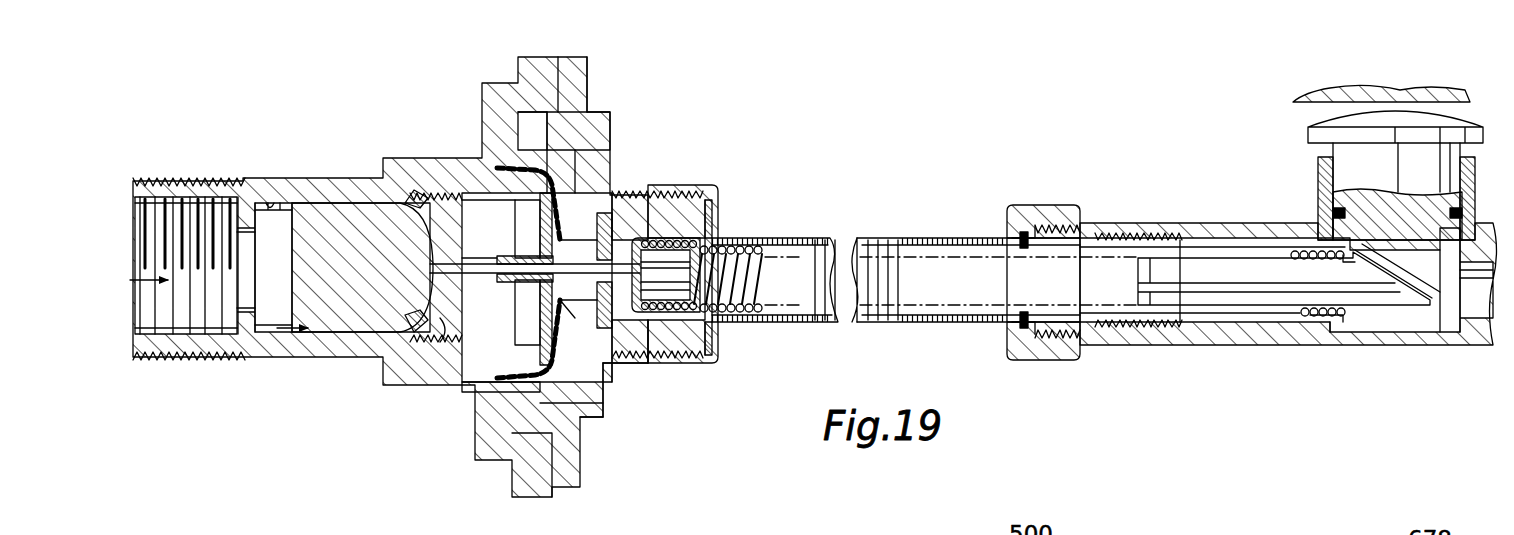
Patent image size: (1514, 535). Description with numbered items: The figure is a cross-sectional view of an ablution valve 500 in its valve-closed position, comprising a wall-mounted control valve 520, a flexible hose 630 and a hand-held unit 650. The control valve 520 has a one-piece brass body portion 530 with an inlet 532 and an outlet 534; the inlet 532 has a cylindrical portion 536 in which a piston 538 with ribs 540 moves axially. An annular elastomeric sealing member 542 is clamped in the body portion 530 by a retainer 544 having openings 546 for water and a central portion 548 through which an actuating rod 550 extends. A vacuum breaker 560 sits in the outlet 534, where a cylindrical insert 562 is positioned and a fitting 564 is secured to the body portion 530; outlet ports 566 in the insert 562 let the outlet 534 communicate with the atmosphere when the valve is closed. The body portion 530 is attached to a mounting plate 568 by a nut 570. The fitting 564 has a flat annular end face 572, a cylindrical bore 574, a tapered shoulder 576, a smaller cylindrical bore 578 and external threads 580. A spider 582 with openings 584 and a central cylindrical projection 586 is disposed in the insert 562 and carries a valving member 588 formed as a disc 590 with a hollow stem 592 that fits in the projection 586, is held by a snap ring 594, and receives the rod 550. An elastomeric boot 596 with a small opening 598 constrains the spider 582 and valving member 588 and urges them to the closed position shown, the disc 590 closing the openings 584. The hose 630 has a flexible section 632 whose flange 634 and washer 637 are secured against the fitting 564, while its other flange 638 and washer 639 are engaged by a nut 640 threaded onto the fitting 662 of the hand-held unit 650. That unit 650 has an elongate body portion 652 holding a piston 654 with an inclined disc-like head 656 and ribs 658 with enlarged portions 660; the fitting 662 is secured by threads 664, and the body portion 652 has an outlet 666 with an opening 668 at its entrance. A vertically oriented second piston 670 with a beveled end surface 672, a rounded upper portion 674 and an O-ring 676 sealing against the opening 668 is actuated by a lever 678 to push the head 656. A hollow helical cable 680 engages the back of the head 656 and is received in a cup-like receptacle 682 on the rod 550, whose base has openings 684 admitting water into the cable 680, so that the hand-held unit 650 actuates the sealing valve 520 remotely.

The ablution valve 500 is at (973, 128).
The wall-mounted control valve 520 is at (645, 118).
The body portion 530 is at (343, 187).
The inlet 532 is at (137, 210).
The outlet 534 is at (615, 195).
The cylindrical portion 536 is at (272, 203).
The piston 538 is at (293, 300).
The ribs 540 is at (333, 328).
The sealing member 542 is at (410, 322).
The retainer 544 is at (440, 330).
The openings 546 is at (488, 224).
The central portion 548 is at (425, 290).
The actuating rod 550 is at (415, 325).
The vacuum breaker 560 is at (612, 350).
The cylindrical insert 562 is at (523, 387).
The fitting 564 is at (590, 178).
The outlet ports 566 is at (583, 137).
The mounting plate 568 is at (520, 72).
The nut 570 is at (578, 90).
The annular end face 572 is at (605, 380).
The cylindrical bore 574 is at (640, 185).
The tapered shoulder 576 is at (652, 357).
The cylindrical bore 578 is at (702, 360).
The threads 580 is at (655, 185).
The spider 582 is at (493, 157).
The openings 584 is at (535, 232).
The cylindrical projection 586 is at (506, 322).
The valving member 588 is at (604, 238).
The disc 590 is at (560, 248).
The stem 592 is at (505, 284).
The snap ring 594 is at (508, 262).
The boot 596 is at (498, 168).
The opening 598 is at (568, 322).
The flexible hose 630 is at (868, 205).
The flexible section 632 is at (885, 245).
The flange 634 is at (718, 358).
The washer 637 is at (718, 339).
The flange 638 is at (1018, 330).
The washer 639 is at (1025, 232).
The nut 640 is at (1060, 218).
The hand-held unit 650 is at (1225, 193).
The body portion 652 is at (1462, 332).
The piston 654 is at (1362, 328).
The head 656 is at (1380, 345).
The ribs 658 is at (1258, 305).
The enlarged portions 660 is at (1350, 335).
The fitting 662 is at (1108, 345).
The threads 664 is at (1188, 345).
The outlet 666 is at (1485, 310).
The opening 668 is at (1448, 245).
The second piston 670 is at (1340, 170).
The beveled end surface 672 is at (1328, 232).
The rounded upper portion 674 is at (1330, 118).
The O-ring 676 is at (1420, 215).
The lever 678 is at (1410, 93).
The cable 680 is at (760, 250).
The cup-like receptacle 682 is at (700, 246).
The openings 684 is at (641, 288).